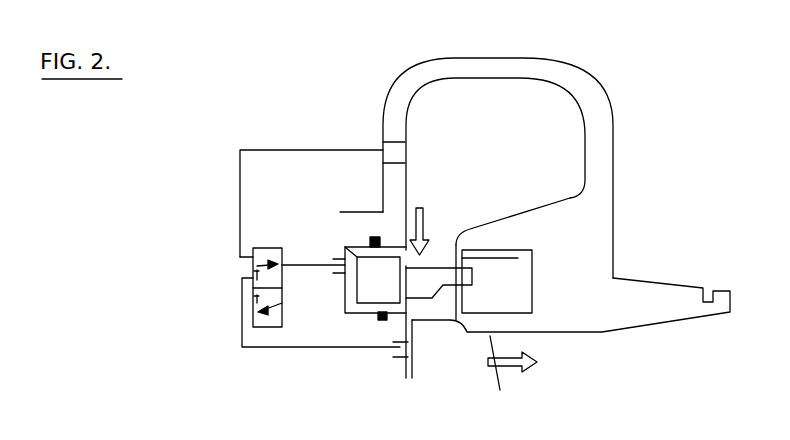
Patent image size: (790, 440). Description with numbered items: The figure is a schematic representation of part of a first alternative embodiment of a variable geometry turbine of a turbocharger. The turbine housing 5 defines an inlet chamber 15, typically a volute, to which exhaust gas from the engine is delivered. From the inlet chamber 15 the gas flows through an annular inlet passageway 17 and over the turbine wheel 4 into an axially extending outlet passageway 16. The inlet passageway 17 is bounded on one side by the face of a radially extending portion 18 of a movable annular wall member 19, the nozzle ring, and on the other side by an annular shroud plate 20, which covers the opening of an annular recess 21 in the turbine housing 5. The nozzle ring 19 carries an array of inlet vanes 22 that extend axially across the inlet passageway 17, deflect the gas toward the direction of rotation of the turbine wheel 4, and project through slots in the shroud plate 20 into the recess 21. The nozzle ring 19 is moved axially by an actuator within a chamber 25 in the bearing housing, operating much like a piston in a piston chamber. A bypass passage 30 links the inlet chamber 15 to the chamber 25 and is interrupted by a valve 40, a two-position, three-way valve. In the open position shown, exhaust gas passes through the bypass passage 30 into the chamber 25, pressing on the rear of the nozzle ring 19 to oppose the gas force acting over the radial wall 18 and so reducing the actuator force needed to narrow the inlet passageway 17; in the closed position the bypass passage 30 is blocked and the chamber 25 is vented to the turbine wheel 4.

The turbine wheel 4 is at (488, 380).
The turbine housing 5 is at (497, 68).
The inlet chamber 15 is at (560, 122).
The outlet passageway 16 is at (645, 363).
The inlet passageway 17 is at (437, 252).
The radially extending portion 18 is at (402, 260).
The movable annular wall member 19 is at (345, 247).
The annular shroud plate 20 is at (465, 258).
The annular recess 21 is at (518, 279).
The inlet vanes 22 is at (418, 287).
The chamber 25 is at (352, 303).
The bypass passage 30 is at (297, 150).
The valve 40 is at (243, 280).